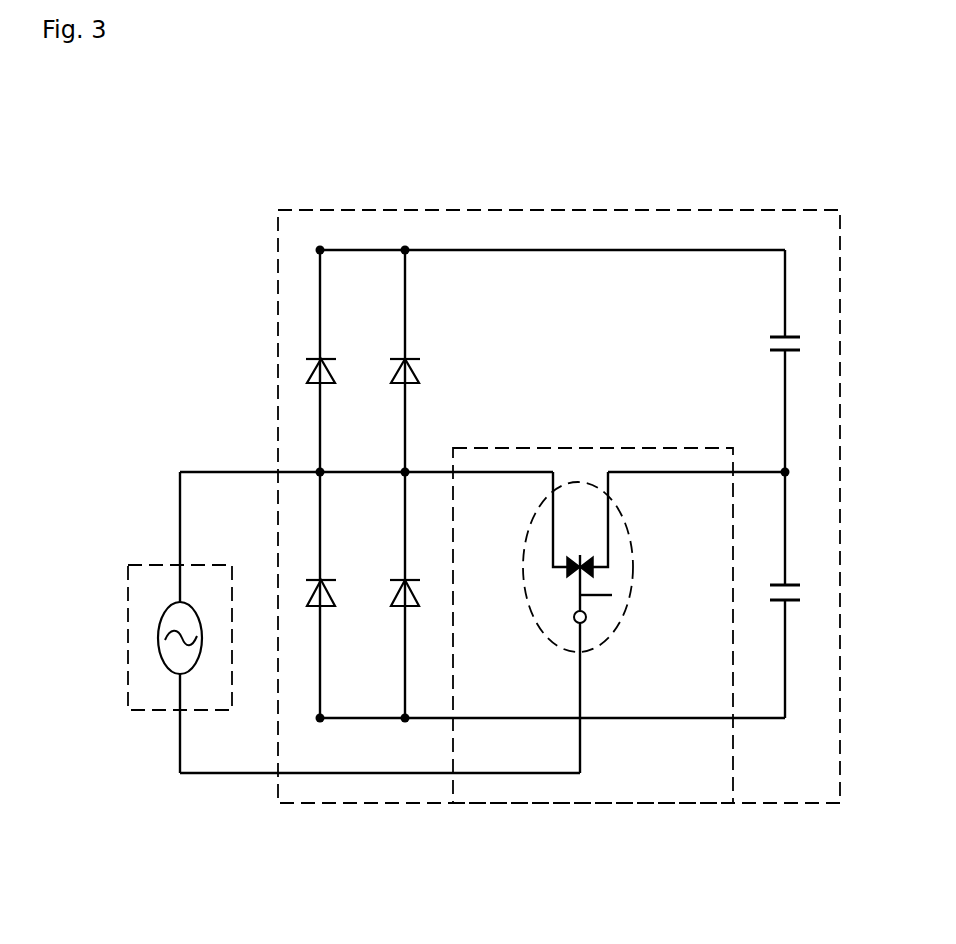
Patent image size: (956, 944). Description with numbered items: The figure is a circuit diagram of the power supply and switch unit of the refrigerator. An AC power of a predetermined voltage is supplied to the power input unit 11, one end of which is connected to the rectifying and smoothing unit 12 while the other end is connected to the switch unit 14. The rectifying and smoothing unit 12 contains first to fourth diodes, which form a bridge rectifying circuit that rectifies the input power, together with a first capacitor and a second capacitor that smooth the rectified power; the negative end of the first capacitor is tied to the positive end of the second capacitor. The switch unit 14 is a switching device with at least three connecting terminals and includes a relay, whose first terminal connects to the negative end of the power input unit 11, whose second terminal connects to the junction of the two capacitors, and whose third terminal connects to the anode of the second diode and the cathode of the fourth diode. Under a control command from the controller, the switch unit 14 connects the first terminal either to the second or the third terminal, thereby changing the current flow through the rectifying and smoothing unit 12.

The power input unit 11 is at (128, 672).
The rectifying and smoothing unit 12 is at (500, 210).
The switch unit 14 is at (633, 592).